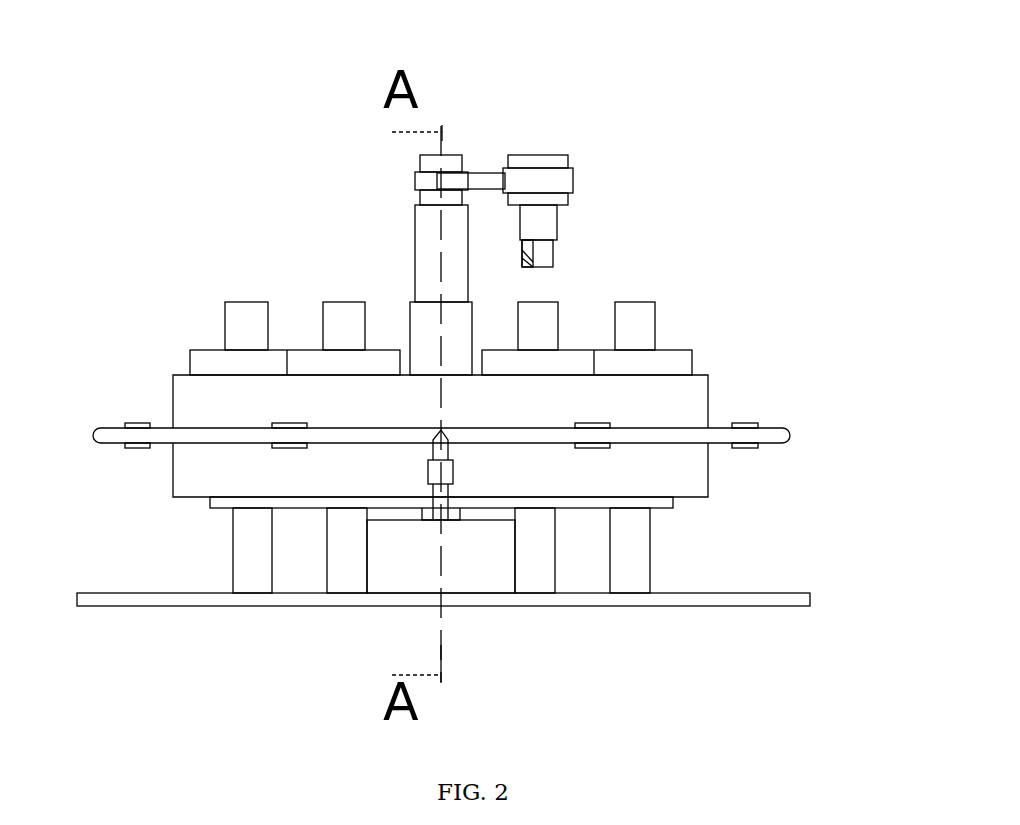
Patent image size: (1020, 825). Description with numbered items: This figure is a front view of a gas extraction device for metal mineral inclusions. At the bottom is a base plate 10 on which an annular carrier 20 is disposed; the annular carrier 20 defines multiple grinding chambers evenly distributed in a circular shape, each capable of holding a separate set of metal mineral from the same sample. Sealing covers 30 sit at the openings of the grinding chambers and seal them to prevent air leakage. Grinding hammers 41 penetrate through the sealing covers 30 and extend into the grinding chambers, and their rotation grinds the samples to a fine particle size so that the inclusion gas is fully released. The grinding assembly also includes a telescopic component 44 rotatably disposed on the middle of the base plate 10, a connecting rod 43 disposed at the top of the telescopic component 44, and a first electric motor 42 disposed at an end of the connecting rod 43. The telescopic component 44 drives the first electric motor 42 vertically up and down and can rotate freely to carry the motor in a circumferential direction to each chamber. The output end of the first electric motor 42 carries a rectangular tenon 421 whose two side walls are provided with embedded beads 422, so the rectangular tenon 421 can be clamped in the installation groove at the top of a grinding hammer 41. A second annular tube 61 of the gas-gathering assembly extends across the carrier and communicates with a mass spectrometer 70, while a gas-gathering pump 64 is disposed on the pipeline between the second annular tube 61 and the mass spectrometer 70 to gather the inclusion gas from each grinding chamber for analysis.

The base plate 10 is at (182, 598).
The annular carrier 20 is at (197, 405).
The sealing cover 30 is at (205, 367).
The grinding hammer 41 is at (242, 317).
The first electric motor 42 is at (560, 162).
The rectangular tenon 421 is at (553, 257).
The embedded bead 422 is at (553, 247).
The connecting rod 43 is at (482, 180).
The telescopic component 44 is at (432, 242).
The second annular tube 61 is at (777, 433).
The gas-gathering pump 64 is at (442, 468).
The mass spectrometer 70 is at (477, 555).